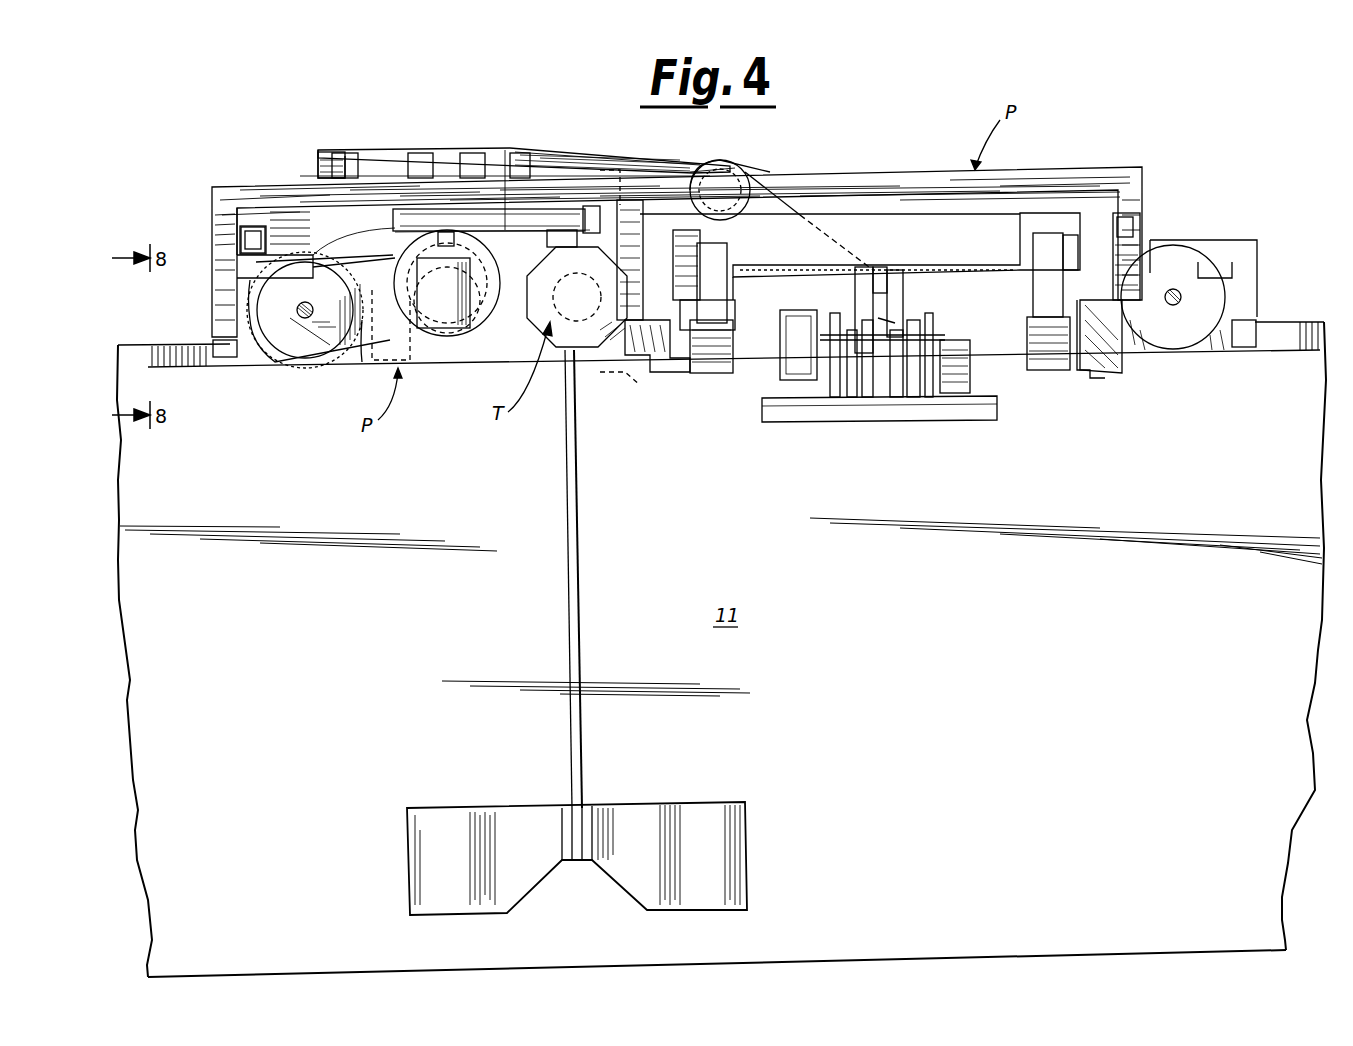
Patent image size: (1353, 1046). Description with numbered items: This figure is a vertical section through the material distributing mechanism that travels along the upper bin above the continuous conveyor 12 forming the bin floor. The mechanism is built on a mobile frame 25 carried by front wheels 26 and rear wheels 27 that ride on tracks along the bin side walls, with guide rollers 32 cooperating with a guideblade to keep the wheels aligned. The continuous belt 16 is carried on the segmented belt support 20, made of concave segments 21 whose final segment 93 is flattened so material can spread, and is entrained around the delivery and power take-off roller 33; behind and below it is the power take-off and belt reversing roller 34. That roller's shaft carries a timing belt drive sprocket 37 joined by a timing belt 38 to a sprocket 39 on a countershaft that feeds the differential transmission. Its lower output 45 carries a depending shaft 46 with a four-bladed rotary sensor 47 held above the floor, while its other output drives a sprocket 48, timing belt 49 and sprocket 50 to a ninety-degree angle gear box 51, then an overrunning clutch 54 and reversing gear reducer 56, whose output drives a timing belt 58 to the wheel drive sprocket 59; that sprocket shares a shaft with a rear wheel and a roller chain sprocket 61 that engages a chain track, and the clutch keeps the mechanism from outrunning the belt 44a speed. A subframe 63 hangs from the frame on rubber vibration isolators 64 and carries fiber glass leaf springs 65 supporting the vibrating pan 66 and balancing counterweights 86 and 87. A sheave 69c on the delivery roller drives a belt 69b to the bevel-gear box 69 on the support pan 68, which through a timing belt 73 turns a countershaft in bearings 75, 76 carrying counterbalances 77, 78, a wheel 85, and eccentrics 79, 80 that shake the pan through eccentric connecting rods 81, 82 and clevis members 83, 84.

The continuous conveyor 12 is at (930, 950).
The mobile frame 25 is at (215, 190).
The front wheels 26 is at (1195, 343).
The rear wheels 27 is at (253, 318).
The guide rollers 32 is at (225, 357).
The delivery and power take-off roller 33 is at (716, 163).
The power take-off and belt reversing roller 34 is at (352, 248).
The timing belt drive sprocket 37 is at (368, 262).
The roller chain sprocket 61 is at (240, 333).
The wheel drive sprocket 59 is at (292, 340).
The timing belt 58 is at (350, 342).
The reversing gear reducer 56 is at (393, 360).
The overrunning clutch 54 is at (458, 333).
The 90° angle gear box 51 is at (445, 333).
The lower output 45 is at (578, 350).
The depending shaft 46 is at (580, 548).
The four-bladed rotary sensor 47 is at (723, 802).
The belt 44a is at (496, 205).
The sprocket 39 is at (615, 225).
The rubber vibration isolators 64 is at (662, 368).
The subframe 63 is at (675, 378).
The continuous belt 16 is at (598, 158).
The sprocket 50 is at (402, 205).
The concave segments 21 is at (425, 168).
The segmented belt support 20 is at (440, 165).
The timing belt 49 is at (505, 223).
The final segment 93 is at (538, 235).
The timing belt 38 is at (532, 158).
The sprocket 48 is at (607, 215).
The sheave 69c is at (725, 175).
The belt 69b is at (790, 190).
The bevel-gear box 69 is at (925, 318).
The balancing counterweight 87 is at (687, 250).
The vibrating pan 66 is at (873, 300).
The fiber glass leaf springs 65 is at (720, 280).
The balancing counterweight 86 is at (1095, 258).
The timing belt 73 is at (800, 350).
The eccentric connecting rod 81 is at (858, 318).
The clevis member 83 is at (876, 275).
The clevis member 84 is at (900, 300).
The eccentric connecting rod 82 is at (888, 322).
The bearing 75 is at (835, 385).
The counterbalance 77 is at (851, 385).
The eccentric 79 is at (867, 385).
The eccentric 80 is at (897, 385).
The counterbalance 78 is at (914, 385).
The bearing 76 is at (930, 385).
The wheel 85 is at (972, 368).
The support pan 68 is at (985, 415).